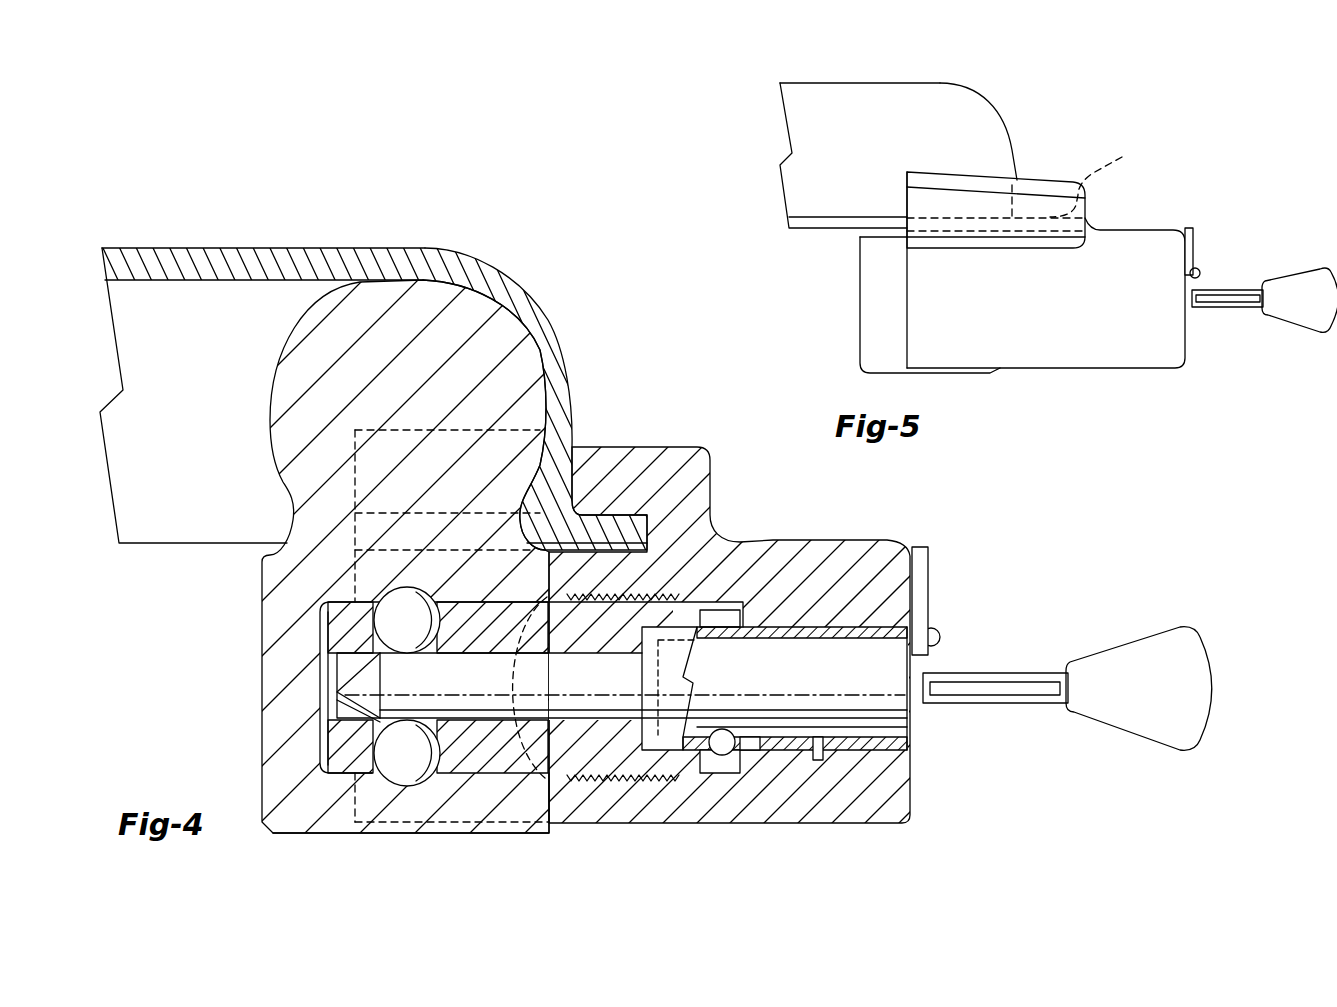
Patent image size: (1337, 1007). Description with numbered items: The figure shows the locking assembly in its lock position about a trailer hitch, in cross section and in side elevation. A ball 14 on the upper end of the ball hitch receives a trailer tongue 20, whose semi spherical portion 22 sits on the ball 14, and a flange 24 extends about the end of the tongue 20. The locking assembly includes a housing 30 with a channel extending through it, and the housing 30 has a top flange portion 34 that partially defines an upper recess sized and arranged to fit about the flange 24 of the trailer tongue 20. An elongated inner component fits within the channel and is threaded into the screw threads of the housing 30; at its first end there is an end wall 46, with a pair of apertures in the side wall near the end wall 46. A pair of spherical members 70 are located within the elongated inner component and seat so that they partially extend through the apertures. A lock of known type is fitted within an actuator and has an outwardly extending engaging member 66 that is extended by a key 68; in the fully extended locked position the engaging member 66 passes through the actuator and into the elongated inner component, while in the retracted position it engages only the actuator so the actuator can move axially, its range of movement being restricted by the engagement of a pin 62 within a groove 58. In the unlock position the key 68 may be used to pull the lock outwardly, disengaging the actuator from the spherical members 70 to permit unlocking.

In FIG. 4, the ball 14 is at (455, 325).
In FIG. 4, the trailer tongue 20 is at (360, 232).
In FIG. 5, the trailer tongue 20 is at (800, 80).
In FIG. 4, the semi spherical portion 22 is at (527, 303).
In FIG. 5, the semi spherical portion 22 is at (987, 100).
In FIG. 5, the flange 24 is at (1081, 177).
In FIG. 4, the housing 30 is at (903, 550).
In FIG. 5, the housing 30 is at (1172, 233).
In FIG. 4, the top flange portion 34 is at (660, 450).
In FIG. 5, the top flange portion 34 is at (1033, 180).
In FIG. 4, the end wall 46 is at (333, 627).
In FIG. 4, the groove 58 is at (792, 743).
In FIG. 4, the pin 62 is at (805, 757).
In FIG. 4, the engaging member 66 is at (720, 747).
In FIG. 4, the key 68 is at (1158, 643).
In FIG. 5, the key 68 is at (1312, 278).
In FIG. 4, the spherical members 70 is at (410, 760).